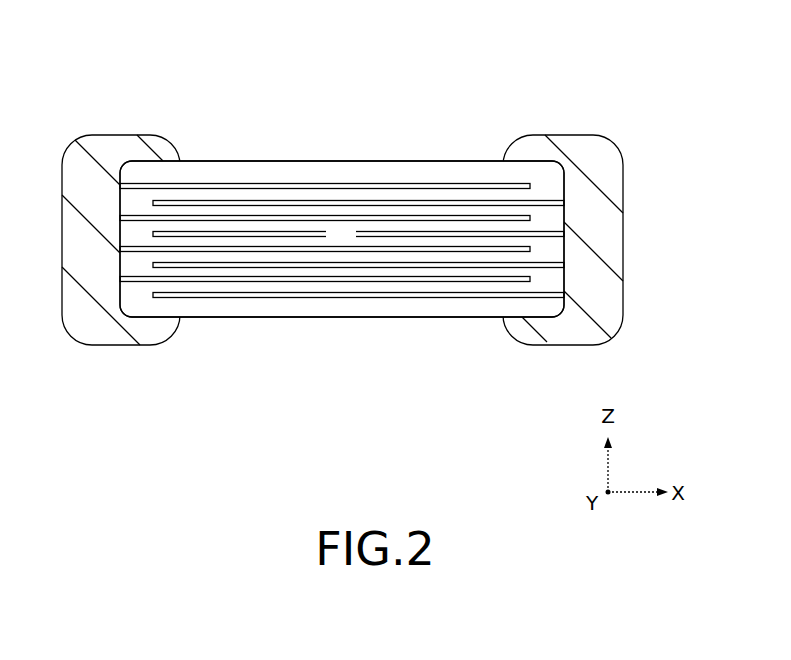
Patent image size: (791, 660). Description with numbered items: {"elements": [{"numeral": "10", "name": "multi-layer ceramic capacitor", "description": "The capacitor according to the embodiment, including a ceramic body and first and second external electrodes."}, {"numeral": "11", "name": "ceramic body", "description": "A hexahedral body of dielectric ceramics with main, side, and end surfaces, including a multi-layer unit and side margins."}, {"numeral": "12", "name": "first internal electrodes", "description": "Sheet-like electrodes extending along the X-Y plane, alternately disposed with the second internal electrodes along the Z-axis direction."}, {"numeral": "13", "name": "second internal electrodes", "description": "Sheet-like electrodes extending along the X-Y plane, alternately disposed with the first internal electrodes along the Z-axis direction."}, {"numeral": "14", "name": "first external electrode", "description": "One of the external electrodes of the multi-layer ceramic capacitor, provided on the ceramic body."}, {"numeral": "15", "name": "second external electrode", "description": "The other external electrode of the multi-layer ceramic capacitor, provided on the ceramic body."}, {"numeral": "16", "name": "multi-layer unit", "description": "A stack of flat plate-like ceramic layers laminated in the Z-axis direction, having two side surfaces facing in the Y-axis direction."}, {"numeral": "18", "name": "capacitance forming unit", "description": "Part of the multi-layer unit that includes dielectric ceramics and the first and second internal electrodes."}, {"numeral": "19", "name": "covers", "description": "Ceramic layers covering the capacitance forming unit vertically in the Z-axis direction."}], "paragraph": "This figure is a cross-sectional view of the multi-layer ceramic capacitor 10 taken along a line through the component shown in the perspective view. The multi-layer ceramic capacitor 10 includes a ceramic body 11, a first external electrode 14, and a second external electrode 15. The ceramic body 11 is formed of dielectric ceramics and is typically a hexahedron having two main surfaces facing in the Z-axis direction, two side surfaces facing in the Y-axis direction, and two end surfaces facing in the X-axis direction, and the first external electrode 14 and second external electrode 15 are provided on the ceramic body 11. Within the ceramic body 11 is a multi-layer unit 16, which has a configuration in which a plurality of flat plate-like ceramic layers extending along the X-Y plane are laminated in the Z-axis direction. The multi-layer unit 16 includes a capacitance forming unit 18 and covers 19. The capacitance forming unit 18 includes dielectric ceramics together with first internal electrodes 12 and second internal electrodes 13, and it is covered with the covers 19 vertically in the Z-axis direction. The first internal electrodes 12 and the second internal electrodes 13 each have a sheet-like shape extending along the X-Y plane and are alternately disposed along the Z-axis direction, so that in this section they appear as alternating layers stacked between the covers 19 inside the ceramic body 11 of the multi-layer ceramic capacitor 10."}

The multilayer ceramic capacitor 10 is at (84, 58).
The element body 11 is at (198, 108).
The first internal electrode layers 12 is at (222, 276).
The second internal electrode layers 13 is at (392, 292).
The first external electrode 14 is at (92, 135).
The second external electrode 15 is at (595, 134).
The dielectric layer 16 is at (342, 139).
The dielectric layer between internal electrodes 18 is at (357, 250).
The outer layer portion 19 is at (473, 168).